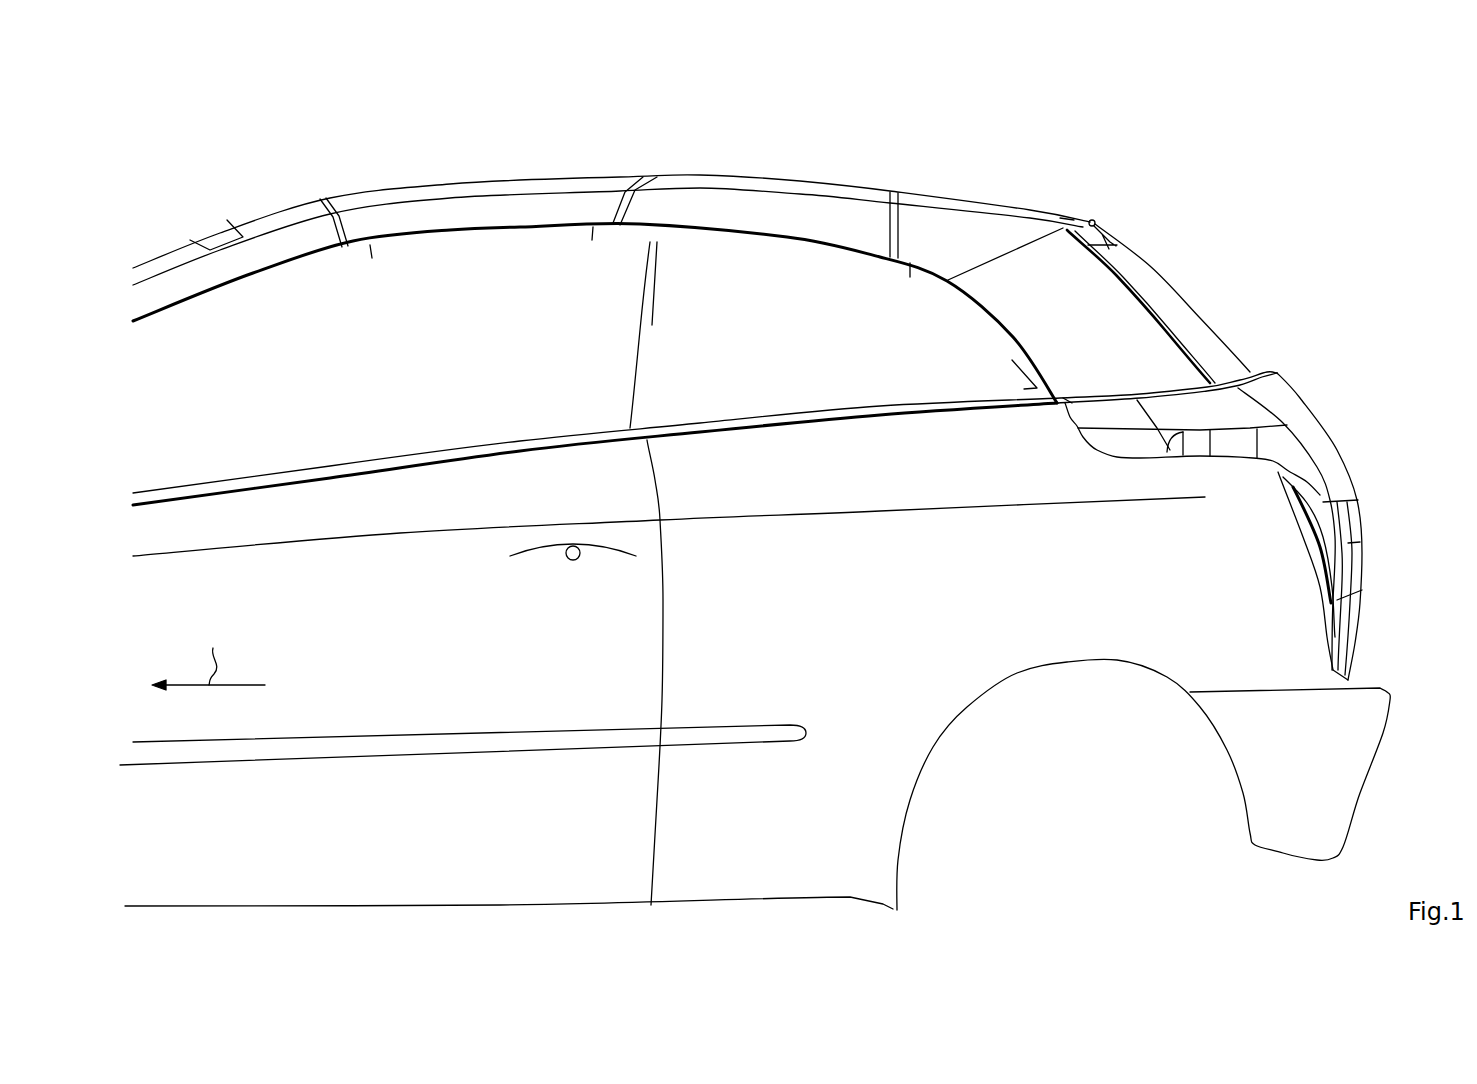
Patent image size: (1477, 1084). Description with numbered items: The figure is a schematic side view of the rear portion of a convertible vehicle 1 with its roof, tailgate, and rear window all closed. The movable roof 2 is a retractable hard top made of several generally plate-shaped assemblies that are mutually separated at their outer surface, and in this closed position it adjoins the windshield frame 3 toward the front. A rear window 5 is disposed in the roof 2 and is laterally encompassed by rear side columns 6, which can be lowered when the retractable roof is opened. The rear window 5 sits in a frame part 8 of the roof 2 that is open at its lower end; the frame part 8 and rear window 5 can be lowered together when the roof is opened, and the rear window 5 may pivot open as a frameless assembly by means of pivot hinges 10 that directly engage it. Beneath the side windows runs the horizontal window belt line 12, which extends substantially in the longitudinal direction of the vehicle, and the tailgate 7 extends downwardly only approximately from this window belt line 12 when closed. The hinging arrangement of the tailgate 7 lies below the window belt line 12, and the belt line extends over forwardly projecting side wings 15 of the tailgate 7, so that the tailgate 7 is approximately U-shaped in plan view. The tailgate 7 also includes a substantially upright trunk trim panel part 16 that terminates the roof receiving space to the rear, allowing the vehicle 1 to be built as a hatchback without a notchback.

The convertible vehicle 1 is at (936, 127).
The movable roof 2 is at (640, 179).
The windshield frame 3 is at (210, 237).
The rear window 5 is at (1183, 313).
The rear side columns 6 is at (1093, 329).
The tailgate 7 is at (1331, 453).
The frame part 8 is at (1169, 340).
The pivot hinges 10 is at (1094, 222).
The window belt line 12 is at (976, 397).
The side wings 15 is at (1115, 417).
The trunk trim panel part 16 is at (1355, 523).